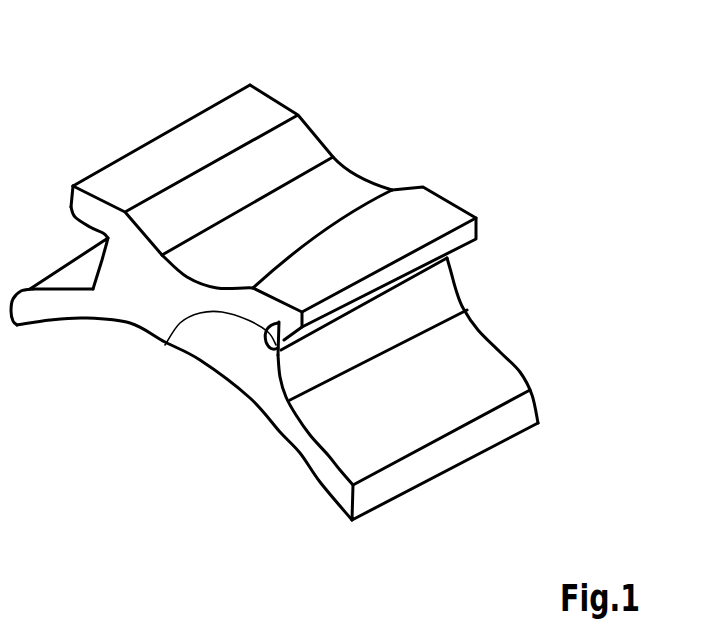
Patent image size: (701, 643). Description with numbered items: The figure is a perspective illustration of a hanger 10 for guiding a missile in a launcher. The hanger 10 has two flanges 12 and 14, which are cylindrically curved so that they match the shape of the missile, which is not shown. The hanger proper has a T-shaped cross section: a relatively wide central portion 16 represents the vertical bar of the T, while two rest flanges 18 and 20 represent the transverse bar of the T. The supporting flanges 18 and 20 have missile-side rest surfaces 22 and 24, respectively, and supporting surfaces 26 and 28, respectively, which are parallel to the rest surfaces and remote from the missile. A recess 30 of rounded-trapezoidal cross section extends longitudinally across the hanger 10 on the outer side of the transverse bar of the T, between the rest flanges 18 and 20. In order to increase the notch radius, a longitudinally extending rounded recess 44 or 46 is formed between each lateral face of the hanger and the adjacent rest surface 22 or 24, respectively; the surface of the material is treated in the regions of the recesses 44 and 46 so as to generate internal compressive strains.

The hanger 10 is at (482, 256).
The flange 12 is at (43, 307).
The flange 14 is at (498, 377).
The central portion 16 is at (202, 333).
The rest flange 18 is at (181, 147).
The rest flange 20 is at (447, 217).
The rest surface 22 is at (88, 225).
The rest surface 24 is at (278, 352).
The supporting surface 26 is at (275, 97).
The supporting surface 28 is at (432, 207).
The recess 30 is at (366, 143).
The rounded recess 44 is at (108, 238).
The rounded recess 46 is at (165, 345).